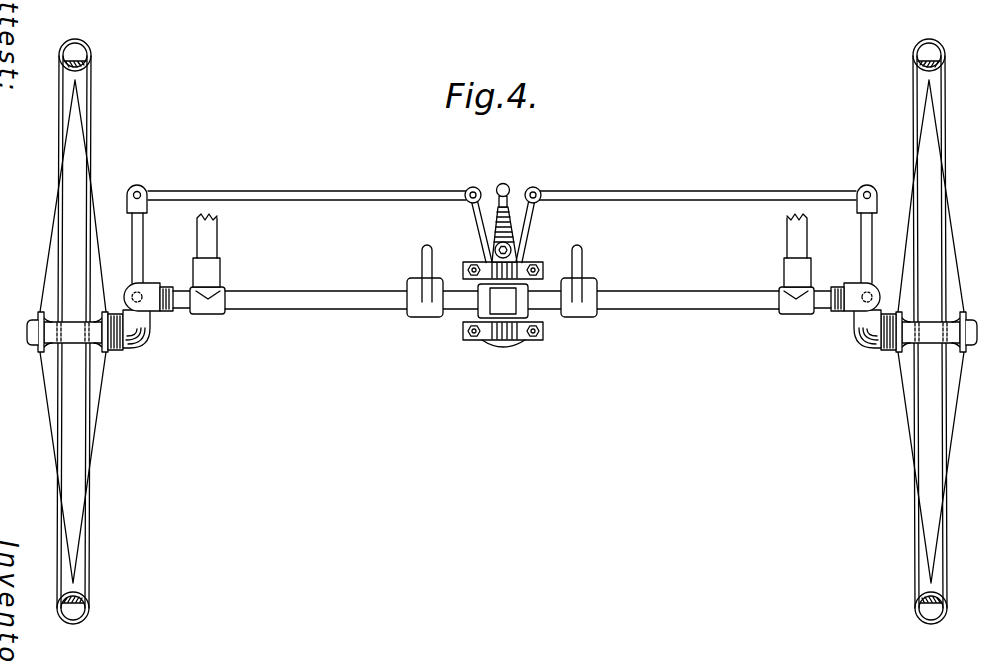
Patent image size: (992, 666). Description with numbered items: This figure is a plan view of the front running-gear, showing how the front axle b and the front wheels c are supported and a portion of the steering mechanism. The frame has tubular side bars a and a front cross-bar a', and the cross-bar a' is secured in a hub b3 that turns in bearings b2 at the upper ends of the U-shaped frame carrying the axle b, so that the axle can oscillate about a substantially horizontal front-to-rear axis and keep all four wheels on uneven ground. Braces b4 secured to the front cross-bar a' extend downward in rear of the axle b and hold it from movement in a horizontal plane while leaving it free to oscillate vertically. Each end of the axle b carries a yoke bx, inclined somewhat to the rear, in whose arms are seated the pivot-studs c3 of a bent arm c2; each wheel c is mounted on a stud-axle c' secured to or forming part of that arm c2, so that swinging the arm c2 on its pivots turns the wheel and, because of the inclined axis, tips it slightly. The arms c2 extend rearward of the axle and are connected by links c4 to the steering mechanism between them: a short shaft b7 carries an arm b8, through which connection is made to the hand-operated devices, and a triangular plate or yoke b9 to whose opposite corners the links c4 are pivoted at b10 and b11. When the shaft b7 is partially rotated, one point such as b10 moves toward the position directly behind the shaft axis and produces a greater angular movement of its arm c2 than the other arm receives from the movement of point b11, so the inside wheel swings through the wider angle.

The front wheel c is at (502, 331).
The stud-axle c' is at (502, 355).
The bent arm c2 is at (138, 323).
The pivot-studs c3 is at (139, 295).
The links c4 is at (345, 195).
The yoke bx is at (131, 288).
The front axle b is at (184, 314).
The side bars a is at (502, 250).
The front cross-bar a' is at (502, 280).
The bearings b2 is at (487, 269).
The hub b3 is at (503, 301).
The braces b4 is at (421, 262).
The short shaft b7 is at (513, 251).
The arm b8 is at (507, 204).
The triangular plate or yoke b9 is at (527, 221).
The pivot point b10 is at (540, 194).
The pivot point b11 is at (472, 189).